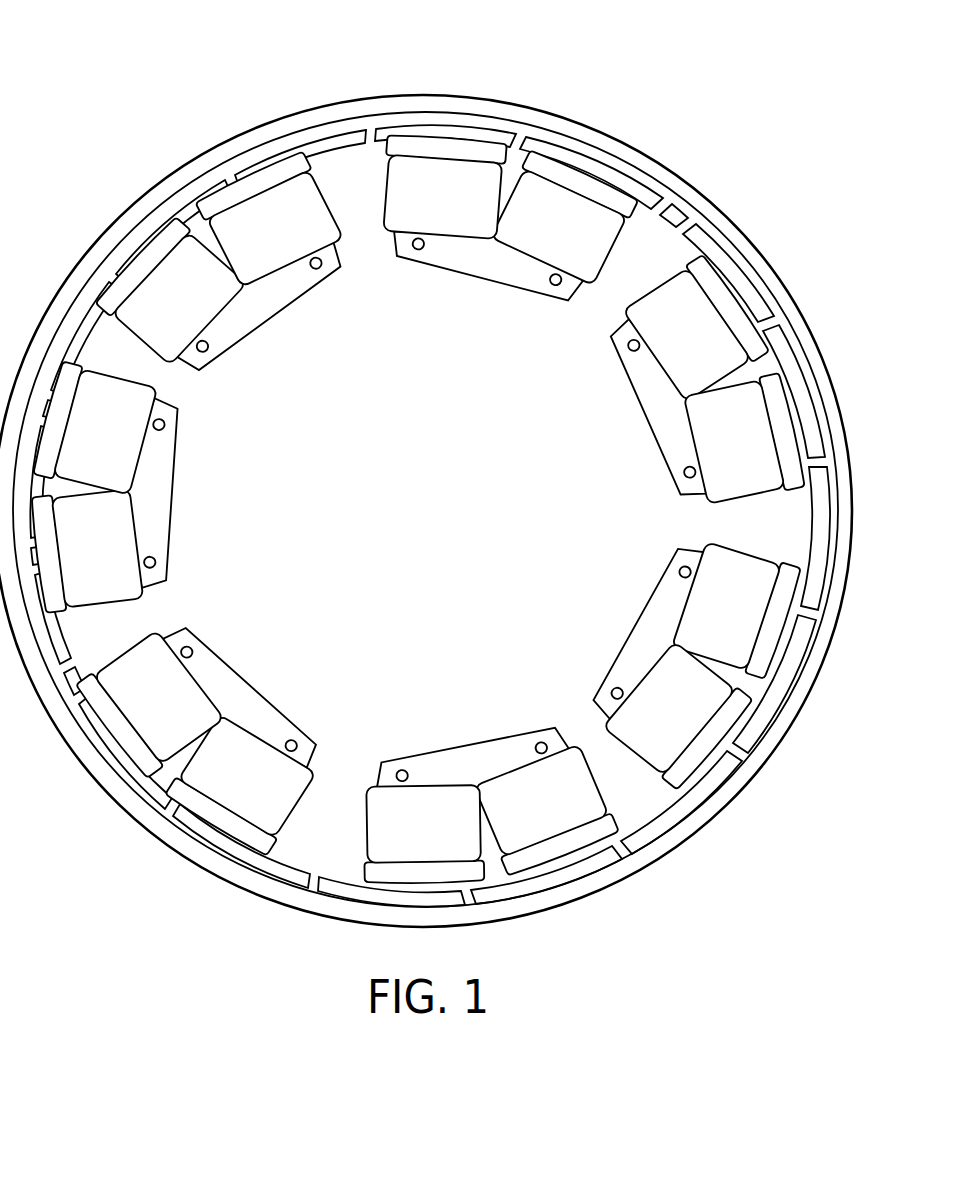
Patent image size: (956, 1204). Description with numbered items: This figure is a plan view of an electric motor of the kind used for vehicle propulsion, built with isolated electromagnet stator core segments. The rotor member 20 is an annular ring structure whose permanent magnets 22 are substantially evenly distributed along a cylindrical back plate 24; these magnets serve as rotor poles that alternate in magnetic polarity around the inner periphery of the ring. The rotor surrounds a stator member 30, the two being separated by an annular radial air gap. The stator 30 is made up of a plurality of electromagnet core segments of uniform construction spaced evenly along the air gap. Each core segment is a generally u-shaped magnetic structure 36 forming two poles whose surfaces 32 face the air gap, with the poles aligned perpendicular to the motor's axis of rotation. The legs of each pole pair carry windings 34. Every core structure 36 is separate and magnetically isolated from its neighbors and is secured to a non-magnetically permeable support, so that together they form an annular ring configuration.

The rotor member 20 is at (440, 491).
The permanent magnets 22 is at (687, 224).
The cylindrical back plate 24 is at (627, 143).
The stator member 30 is at (238, 461).
The pole surfaces 32 is at (421, 147).
The windings 34 is at (458, 175).
The u-shaped magnetic structure 36 is at (436, 257).